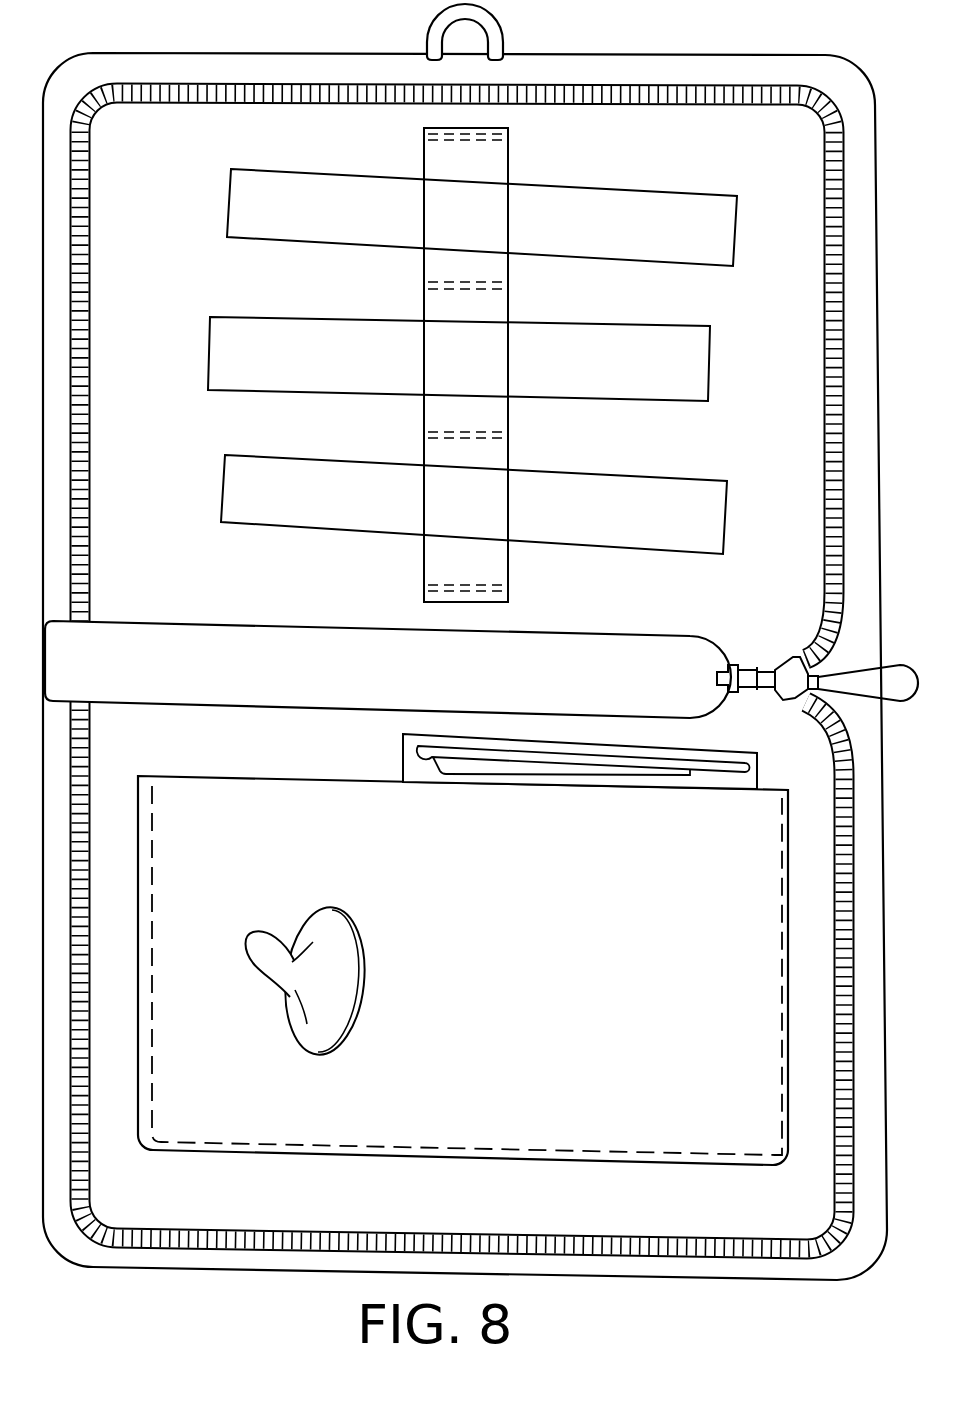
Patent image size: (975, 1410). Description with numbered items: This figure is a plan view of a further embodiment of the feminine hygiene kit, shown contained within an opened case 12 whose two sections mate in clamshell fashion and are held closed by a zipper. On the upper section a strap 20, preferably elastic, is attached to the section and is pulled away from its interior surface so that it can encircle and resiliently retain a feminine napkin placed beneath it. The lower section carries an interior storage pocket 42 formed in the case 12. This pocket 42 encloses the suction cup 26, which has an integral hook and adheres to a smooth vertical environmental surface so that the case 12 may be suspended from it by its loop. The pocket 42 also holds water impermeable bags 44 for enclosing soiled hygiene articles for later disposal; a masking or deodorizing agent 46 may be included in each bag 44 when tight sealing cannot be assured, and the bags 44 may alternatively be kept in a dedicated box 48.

The case 12 is at (257, 53).
The strap 20 is at (508, 311).
The suction cup 26 is at (360, 914).
The interior storage pocket 42 is at (463, 970).
The water impermeable bags 44 is at (460, 764).
The deodorizing agent 46 is at (705, 947).
The dedicated box 48 is at (403, 741).